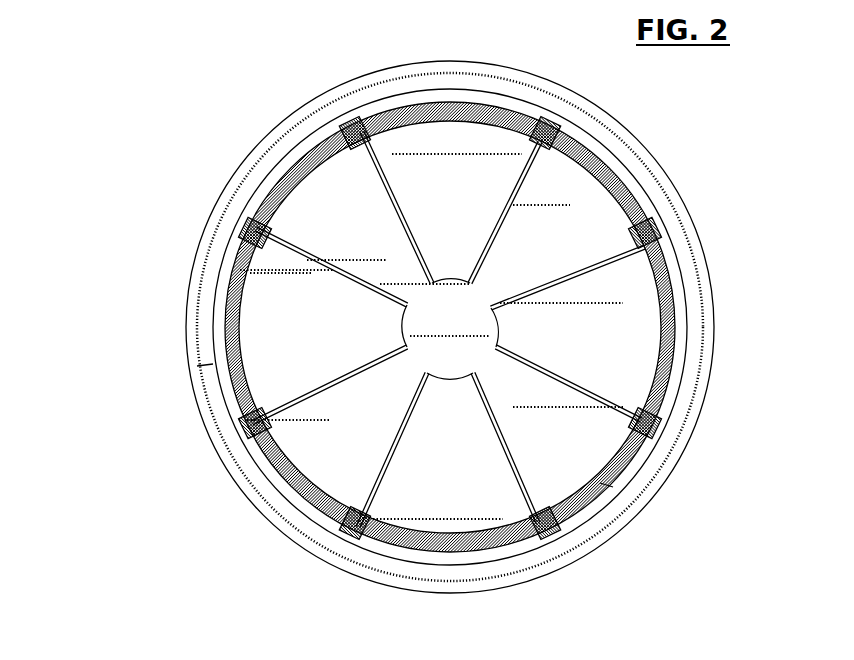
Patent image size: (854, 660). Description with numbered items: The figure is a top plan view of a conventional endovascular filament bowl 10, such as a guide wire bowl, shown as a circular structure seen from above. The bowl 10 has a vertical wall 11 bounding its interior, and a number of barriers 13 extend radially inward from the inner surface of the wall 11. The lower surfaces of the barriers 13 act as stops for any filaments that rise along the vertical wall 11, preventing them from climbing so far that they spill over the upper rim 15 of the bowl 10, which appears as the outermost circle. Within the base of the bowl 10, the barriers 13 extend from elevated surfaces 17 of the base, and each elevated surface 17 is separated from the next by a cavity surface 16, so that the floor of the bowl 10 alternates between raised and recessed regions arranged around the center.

The endovascular filament bowl 10 is at (128, 250).
The vertical wall 11 is at (233, 325).
The barriers 13 is at (316, 163).
The upper rim 15 is at (237, 462).
The cavity surface 16 is at (468, 222).
The elevated surface 17 is at (357, 236).